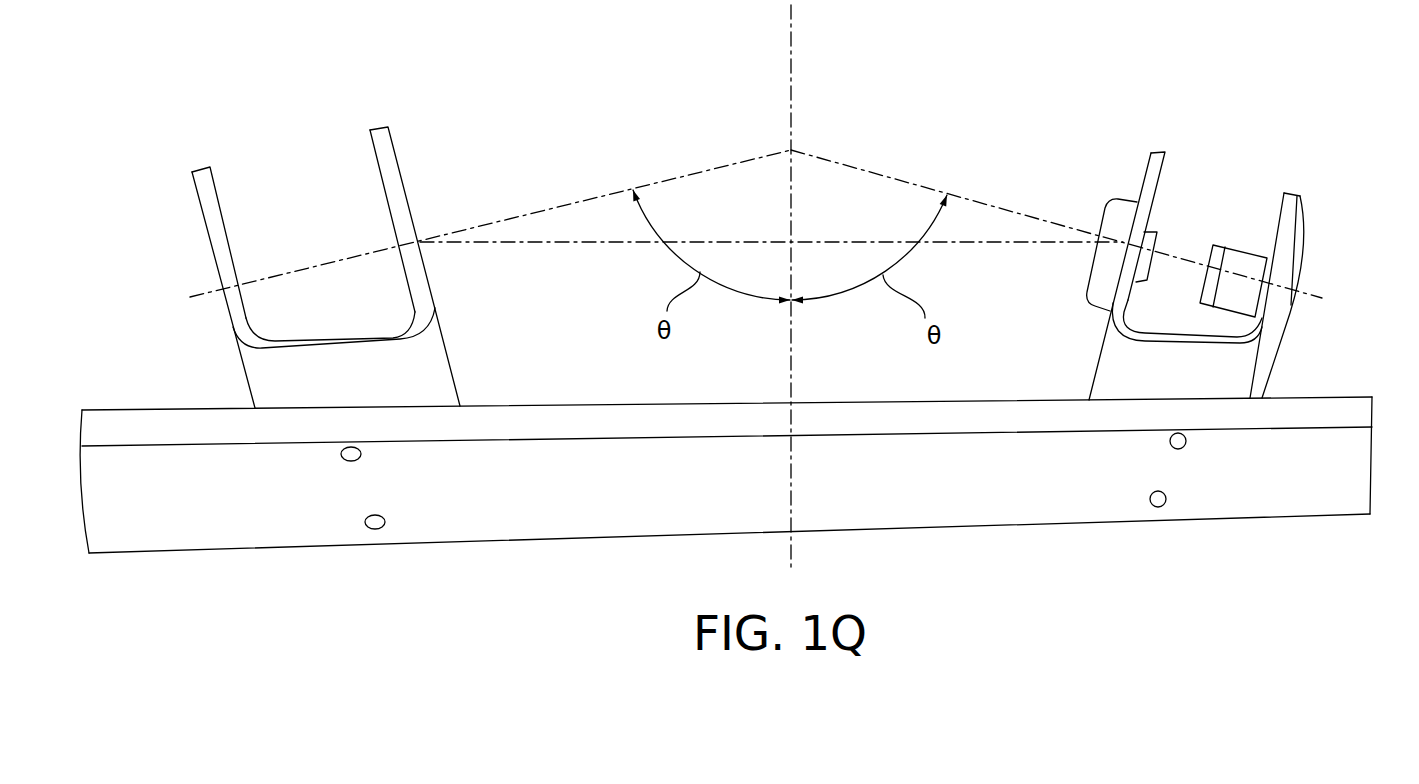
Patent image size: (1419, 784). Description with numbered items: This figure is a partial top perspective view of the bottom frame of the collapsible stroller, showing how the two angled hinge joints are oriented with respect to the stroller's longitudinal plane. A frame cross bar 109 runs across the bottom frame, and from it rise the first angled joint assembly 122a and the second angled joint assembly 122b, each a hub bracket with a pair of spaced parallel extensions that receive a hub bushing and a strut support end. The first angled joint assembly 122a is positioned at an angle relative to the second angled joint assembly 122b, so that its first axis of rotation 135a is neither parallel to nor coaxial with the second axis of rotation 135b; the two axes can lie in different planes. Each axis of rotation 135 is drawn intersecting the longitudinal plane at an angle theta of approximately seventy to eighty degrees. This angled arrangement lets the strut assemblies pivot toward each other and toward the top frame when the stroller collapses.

The frame cross bar 109 is at (918, 483).
The first angled joint assembly 122a is at (1246, 231).
The second angled joint assembly 122b is at (276, 233).
The axis of rotation 135 is at (756, 190).
The first axis of rotation 135a is at (1040, 218).
The second axis of rotation 135b is at (546, 207).